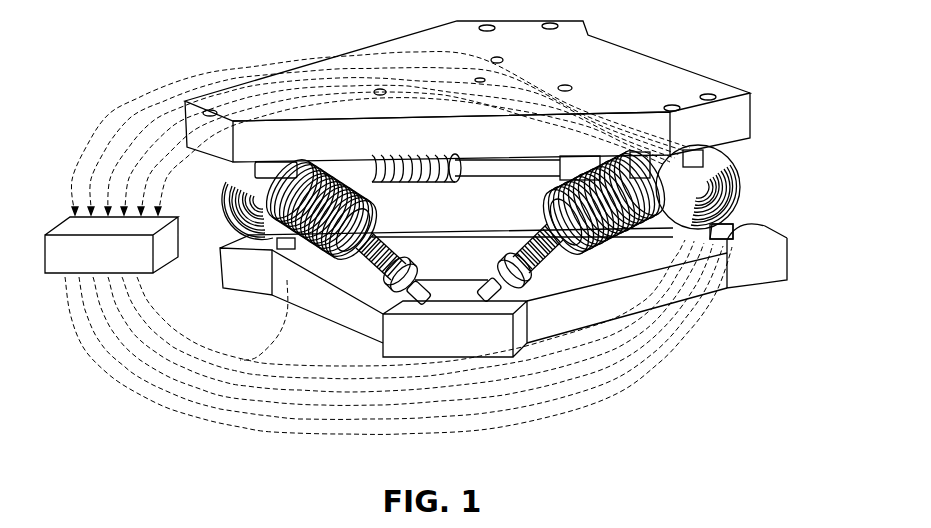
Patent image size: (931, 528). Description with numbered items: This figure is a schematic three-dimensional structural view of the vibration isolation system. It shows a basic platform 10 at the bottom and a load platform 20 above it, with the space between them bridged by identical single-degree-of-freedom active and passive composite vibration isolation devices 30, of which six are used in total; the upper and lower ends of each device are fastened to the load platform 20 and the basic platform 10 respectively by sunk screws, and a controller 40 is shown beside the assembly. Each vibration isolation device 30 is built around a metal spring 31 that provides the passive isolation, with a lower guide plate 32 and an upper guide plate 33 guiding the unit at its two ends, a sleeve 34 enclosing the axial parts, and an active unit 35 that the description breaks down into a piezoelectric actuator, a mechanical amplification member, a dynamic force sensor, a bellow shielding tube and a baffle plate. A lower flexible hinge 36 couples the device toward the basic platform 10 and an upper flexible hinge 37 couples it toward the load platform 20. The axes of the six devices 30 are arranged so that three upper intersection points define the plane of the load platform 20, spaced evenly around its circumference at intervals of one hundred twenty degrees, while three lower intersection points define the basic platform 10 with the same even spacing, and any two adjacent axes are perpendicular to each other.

The basic platform 10 is at (540, 327).
The load platform 20 is at (665, 90).
The single-degree-of-freedom active and passive composite vibration isolation device 30 is at (656, 219).
The metal spring 31 is at (724, 223).
The lower guide plate 32 is at (560, 255).
The upper guide plate 33 is at (743, 180).
The sleeve 34 is at (575, 262).
The electromagnetic coil 35 is at (700, 157).
The lower flexible hinge 36 is at (505, 278).
The upper flexible hinge 37 is at (665, 145).
The controller 40 is at (388, 243).